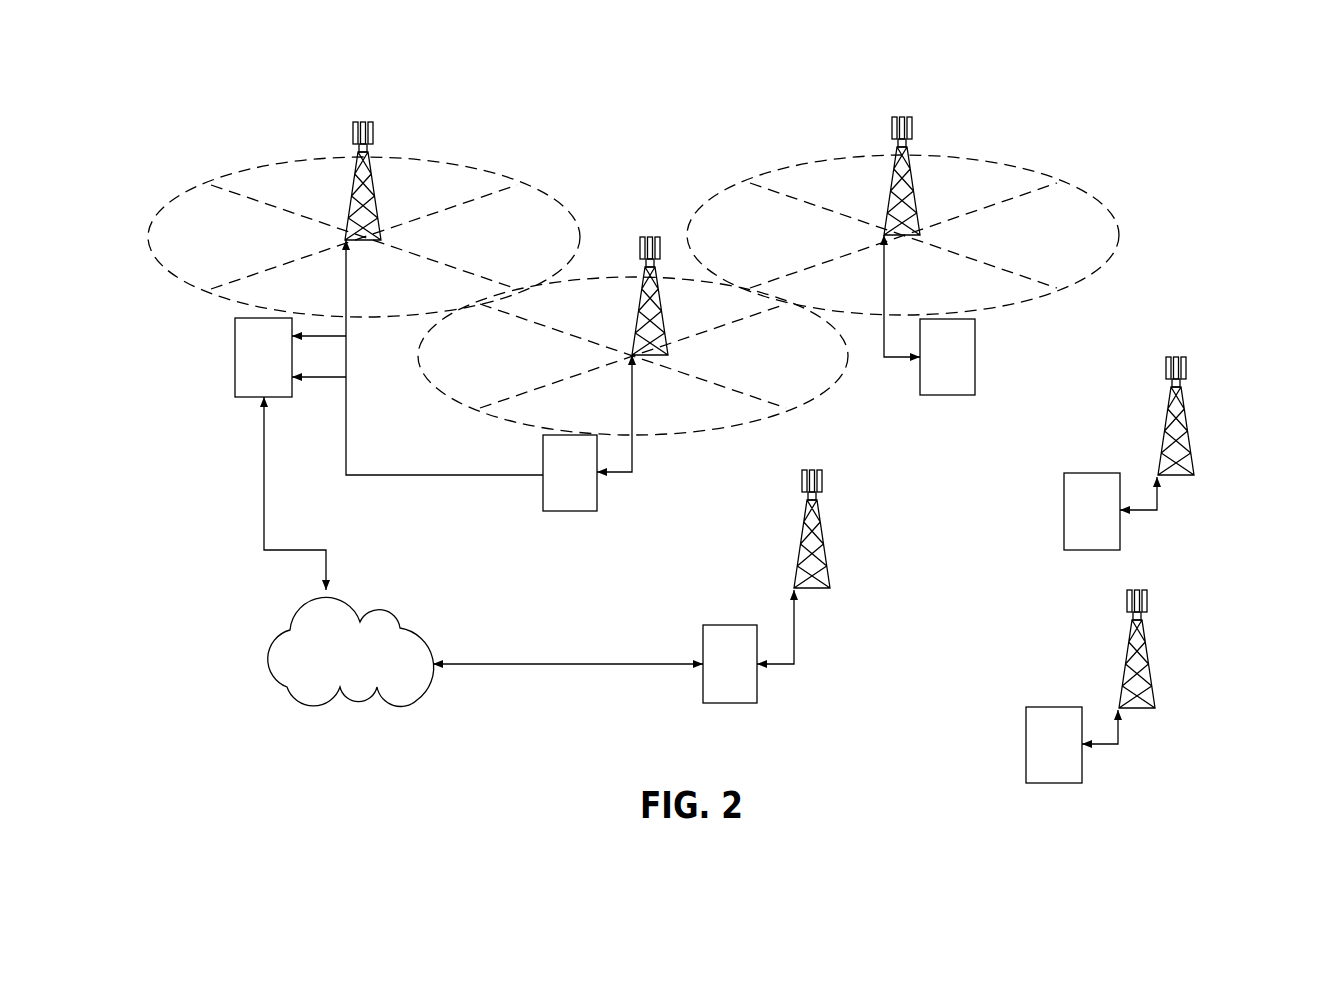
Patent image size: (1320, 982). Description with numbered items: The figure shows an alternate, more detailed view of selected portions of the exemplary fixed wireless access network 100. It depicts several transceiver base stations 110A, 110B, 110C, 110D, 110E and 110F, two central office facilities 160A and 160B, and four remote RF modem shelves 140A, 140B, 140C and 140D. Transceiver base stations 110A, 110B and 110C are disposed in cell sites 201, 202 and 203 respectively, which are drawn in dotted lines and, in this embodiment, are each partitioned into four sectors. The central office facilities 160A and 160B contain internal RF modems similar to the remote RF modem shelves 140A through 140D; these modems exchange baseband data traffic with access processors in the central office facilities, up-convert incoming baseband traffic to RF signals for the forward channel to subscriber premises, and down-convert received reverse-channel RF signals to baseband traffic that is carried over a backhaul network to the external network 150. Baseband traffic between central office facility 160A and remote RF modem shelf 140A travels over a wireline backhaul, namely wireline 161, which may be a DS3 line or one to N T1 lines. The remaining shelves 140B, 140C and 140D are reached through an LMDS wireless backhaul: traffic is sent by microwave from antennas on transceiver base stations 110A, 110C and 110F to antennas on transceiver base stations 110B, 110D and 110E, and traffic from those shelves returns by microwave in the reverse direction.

The fixed wireless access network 100 is at (1137, 94).
The transceiver base station 110A is at (362, 118).
The transceiver base station 110B is at (900, 117).
The transceiver base station 110C is at (650, 237).
The transceiver base station 110D is at (1194, 460).
The transceiver base station 110E is at (1156, 692).
The transceiver base station 110F is at (831, 573).
The remote RF modem shelf 140A is at (570, 512).
The remote RF modem shelf 140B is at (975, 356).
The remote RF modem shelf 140C is at (1095, 473).
The remote RF modem shelf 140D is at (1055, 707).
The external network 150 is at (252, 657).
The central office facility 160A is at (235, 356).
The central office facility 160B is at (730, 625).
The wireline 161 is at (405, 475).
The cell site 201 is at (262, 172).
The cell site 202 is at (797, 167).
The cell site 203 is at (703, 430).